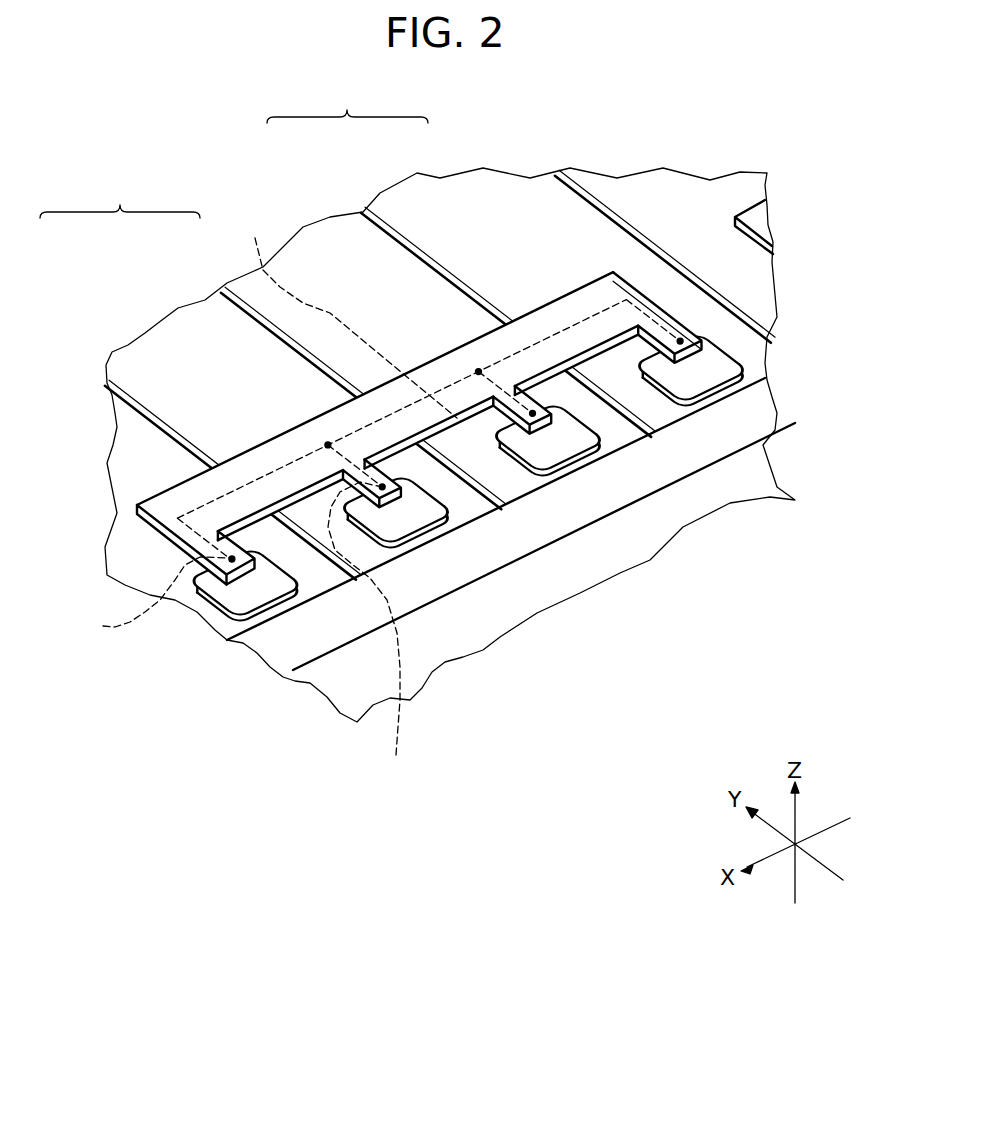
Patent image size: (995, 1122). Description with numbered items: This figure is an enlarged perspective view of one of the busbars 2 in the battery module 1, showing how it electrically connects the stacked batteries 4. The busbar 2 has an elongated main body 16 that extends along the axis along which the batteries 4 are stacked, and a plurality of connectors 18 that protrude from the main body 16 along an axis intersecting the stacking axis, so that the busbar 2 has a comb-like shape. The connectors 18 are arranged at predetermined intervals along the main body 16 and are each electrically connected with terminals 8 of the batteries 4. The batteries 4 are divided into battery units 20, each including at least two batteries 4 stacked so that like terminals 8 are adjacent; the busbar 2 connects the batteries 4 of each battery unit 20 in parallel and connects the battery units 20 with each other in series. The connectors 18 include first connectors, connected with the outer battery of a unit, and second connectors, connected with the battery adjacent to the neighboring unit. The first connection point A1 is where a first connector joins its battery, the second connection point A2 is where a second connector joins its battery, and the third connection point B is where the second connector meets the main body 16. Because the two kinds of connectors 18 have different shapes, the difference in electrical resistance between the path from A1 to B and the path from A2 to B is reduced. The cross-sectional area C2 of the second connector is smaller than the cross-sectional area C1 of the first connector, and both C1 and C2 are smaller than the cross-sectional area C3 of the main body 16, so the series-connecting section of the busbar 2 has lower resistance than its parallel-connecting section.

The solar cell module 1 is at (485, 926).
The busbar 2 is at (500, 424).
The battery 4 is at (142, 445).
The terminal 8 is at (717, 377).
The main body 16 is at (572, 308).
The connector 18 is at (696, 323).
The battery unit 20 is at (234, 147).
The first connection point A1 is at (690, 345).
The second connection point A2 is at (567, 450).
The third connection point B is at (326, 444).
The area of cross section of first connector C1 is at (150, 596).
The area of cross section of second connector C2 is at (369, 632).
The area of cross section of main body C3 is at (347, 314).